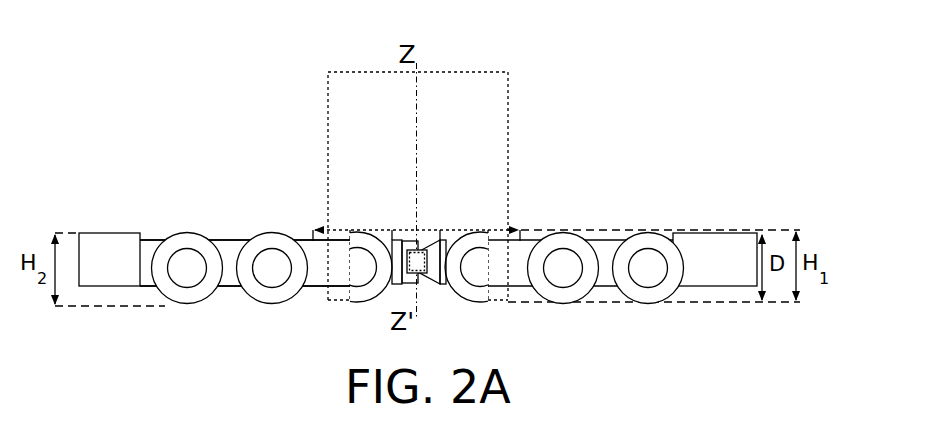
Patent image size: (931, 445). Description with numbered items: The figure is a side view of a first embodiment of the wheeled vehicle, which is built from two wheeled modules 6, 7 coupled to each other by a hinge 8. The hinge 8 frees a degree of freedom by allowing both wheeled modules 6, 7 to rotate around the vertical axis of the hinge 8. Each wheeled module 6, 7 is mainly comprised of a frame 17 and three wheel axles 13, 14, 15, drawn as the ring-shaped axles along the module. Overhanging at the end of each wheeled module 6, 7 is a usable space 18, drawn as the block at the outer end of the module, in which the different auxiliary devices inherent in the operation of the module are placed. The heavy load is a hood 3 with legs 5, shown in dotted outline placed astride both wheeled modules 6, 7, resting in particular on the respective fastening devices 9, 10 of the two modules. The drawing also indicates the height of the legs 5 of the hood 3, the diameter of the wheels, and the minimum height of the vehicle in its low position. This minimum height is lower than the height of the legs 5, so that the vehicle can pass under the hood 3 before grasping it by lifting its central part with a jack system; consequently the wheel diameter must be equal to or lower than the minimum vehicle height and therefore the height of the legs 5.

The hood 3 is at (500, 103).
The legs 5 is at (337, 277).
The wheeled module 6 is at (115, 158).
The wheeled module 7 is at (635, 172).
The hinge 8 is at (422, 265).
The fastening device 9 is at (316, 229).
The fastening device 10 is at (521, 229).
The wheel axle 13 is at (183, 300).
The wheel axle 14 is at (270, 300).
The wheel axle 15 is at (358, 302).
The frame 17 is at (231, 238).
The usable space 18 is at (114, 240).